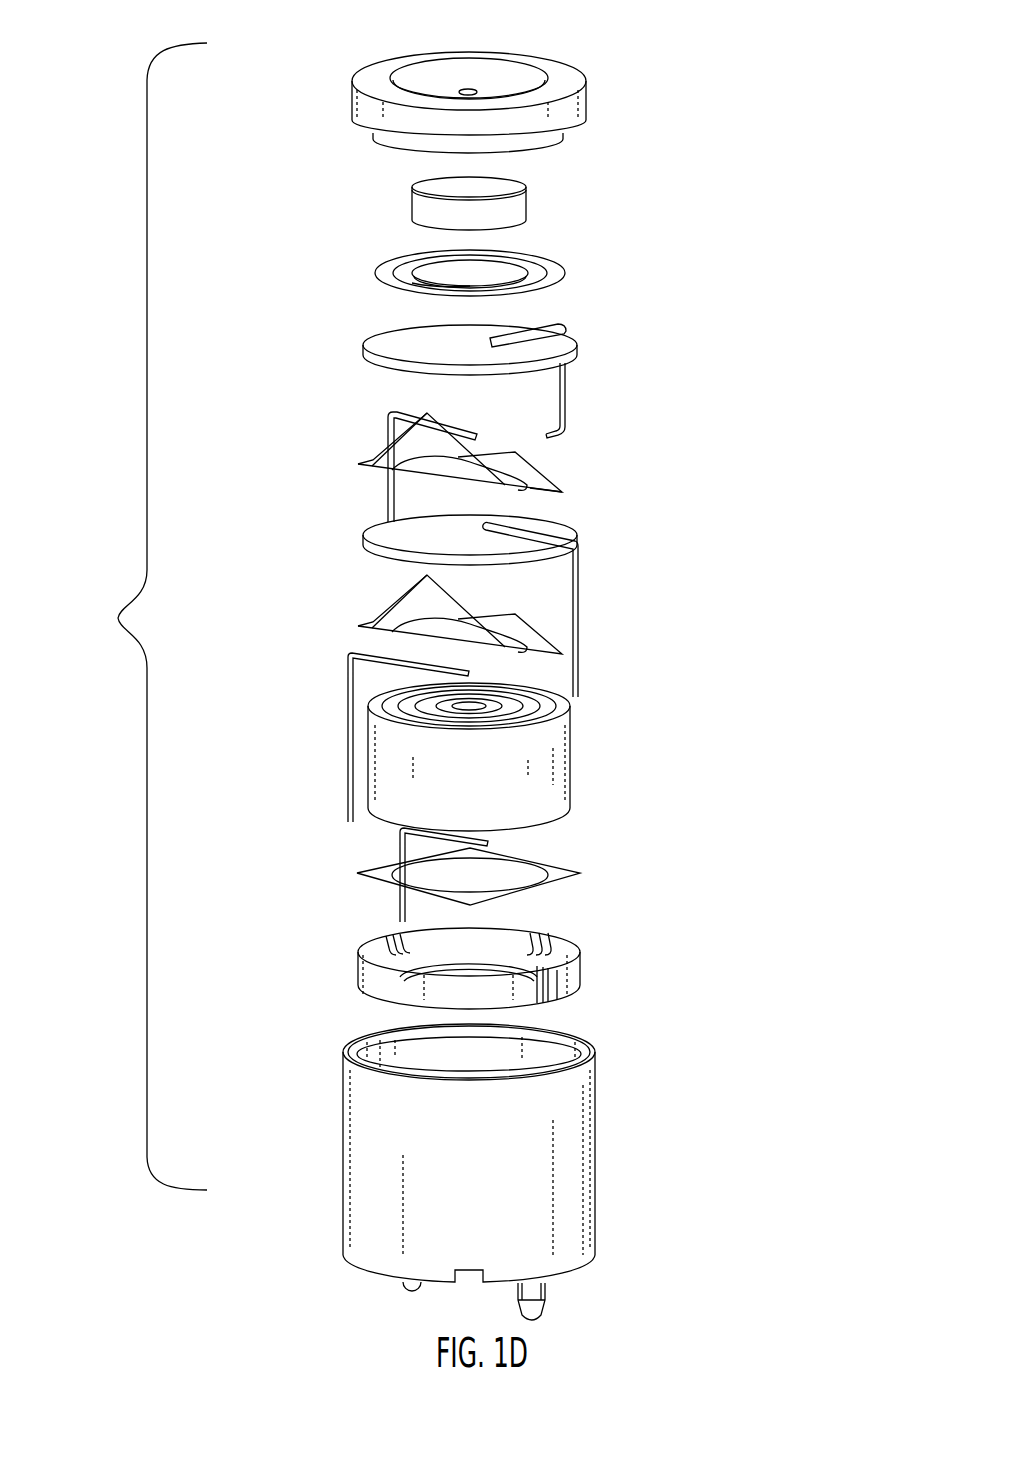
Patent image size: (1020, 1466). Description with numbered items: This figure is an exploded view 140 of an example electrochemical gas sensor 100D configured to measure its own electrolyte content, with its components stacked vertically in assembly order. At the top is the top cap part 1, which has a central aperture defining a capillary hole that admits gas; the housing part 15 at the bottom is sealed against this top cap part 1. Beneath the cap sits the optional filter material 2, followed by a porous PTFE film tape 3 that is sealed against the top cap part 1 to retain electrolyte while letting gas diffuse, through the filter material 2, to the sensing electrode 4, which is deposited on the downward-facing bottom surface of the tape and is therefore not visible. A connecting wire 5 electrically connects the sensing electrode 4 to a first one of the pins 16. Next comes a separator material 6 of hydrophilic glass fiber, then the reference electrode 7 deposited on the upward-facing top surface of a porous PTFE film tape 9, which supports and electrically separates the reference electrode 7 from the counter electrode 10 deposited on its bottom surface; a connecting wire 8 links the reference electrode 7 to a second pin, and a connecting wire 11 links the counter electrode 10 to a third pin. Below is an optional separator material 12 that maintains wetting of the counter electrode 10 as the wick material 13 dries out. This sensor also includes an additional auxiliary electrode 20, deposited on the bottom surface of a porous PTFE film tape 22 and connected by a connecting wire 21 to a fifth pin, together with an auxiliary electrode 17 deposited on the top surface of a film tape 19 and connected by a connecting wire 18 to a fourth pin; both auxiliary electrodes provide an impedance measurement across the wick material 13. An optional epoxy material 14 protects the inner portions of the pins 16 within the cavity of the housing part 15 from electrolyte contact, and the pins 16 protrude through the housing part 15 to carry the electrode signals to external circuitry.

The electrochemical gas sensor 100D is at (134, 616).
The exploded view 140 is at (487, 25).
The top cap part 1 is at (586, 100).
The filter material 2 is at (527, 197).
The porous PTFE film tape 3 is at (565, 272).
The sensing electrode 4 is at (397, 290).
The connecting wire 5 is at (565, 393).
The separator material 6 is at (363, 350).
The reference electrode 7 is at (513, 468).
The connecting wire 8 is at (390, 425).
The porous PTFE film tape 9 is at (545, 487).
The counter electrode 10 is at (433, 472).
The connecting wire 11 is at (580, 568).
The separator material 12 is at (362, 540).
The wick material 13 is at (397, 758).
The epoxy material 14 is at (573, 977).
The housing part 15 is at (362, 1125).
The pins 16 is at (527, 1295).
The auxiliary electrode 17 is at (513, 870).
The connecting wire 18 is at (403, 843).
The film tape 19 is at (560, 878).
The additional auxiliary electrode 20 is at (420, 635).
The connecting wire 21 is at (350, 707).
The porous PTFE film tape 22 is at (417, 602).